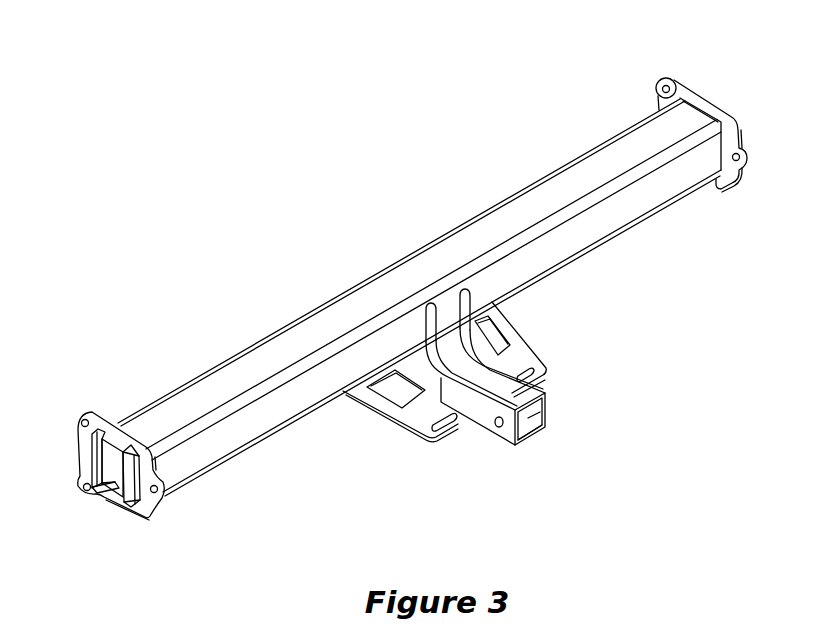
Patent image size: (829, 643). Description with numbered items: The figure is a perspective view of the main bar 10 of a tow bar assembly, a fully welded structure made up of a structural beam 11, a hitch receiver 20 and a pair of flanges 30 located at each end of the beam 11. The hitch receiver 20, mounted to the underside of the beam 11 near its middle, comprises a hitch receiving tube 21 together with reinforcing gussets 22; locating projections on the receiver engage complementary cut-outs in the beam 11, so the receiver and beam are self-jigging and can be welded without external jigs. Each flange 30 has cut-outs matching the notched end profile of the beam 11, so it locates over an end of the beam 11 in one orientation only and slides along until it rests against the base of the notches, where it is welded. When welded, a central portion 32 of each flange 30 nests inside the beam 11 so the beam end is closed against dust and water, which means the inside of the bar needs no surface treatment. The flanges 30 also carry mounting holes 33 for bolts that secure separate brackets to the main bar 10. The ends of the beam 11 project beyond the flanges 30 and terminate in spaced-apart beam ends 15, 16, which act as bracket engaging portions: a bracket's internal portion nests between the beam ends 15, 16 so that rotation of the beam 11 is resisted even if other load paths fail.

The main bar 10 is at (387, 211).
The structural beam 11 is at (267, 413).
The beam end 15 is at (95, 460).
The beam end 16 is at (143, 493).
The hitch receiver 20 is at (470, 453).
The hitch receiving tube 21 is at (544, 430).
The reinforcing gussets 22 is at (421, 414).
The flange 30 is at (694, 88).
The central portion 32 is at (107, 498).
The mounting holes 33 is at (117, 473).